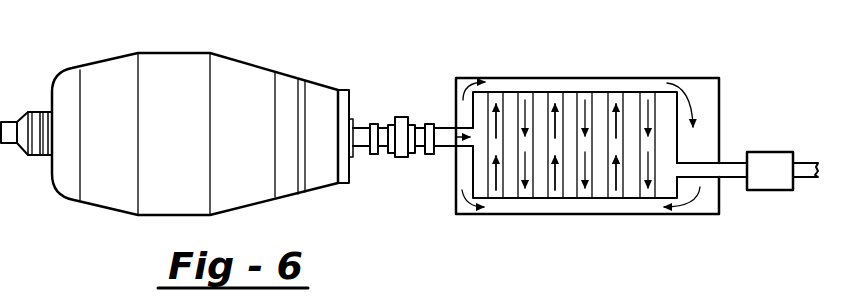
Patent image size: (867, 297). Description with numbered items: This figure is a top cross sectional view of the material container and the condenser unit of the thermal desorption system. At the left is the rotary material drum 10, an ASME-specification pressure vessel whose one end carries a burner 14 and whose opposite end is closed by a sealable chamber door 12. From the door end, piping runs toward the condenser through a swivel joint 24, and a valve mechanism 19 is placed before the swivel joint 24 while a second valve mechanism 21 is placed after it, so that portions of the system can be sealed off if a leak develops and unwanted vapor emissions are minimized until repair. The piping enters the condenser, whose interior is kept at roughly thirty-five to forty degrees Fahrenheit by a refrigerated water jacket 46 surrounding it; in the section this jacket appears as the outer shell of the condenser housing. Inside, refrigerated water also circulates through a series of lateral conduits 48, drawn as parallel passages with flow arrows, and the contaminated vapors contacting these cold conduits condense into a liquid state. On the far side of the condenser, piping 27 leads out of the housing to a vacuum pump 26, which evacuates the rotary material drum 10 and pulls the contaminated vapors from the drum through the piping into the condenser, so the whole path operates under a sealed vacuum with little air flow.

The rotary material drum 10 is at (158, 198).
The burner 14 is at (10, 122).
The sealable chamber door 12 is at (349, 95).
The valve mechanism 19 is at (373, 120).
The valve mechanism 21 is at (430, 120).
The swivel joint 24 is at (402, 160).
The refrigerated water jacket 46 is at (583, 78).
The lateral conduits 48 is at (647, 165).
The piping 27 is at (728, 160).
The vacuum pump 26 is at (772, 168).